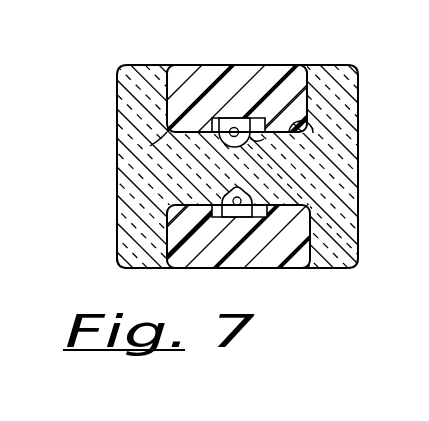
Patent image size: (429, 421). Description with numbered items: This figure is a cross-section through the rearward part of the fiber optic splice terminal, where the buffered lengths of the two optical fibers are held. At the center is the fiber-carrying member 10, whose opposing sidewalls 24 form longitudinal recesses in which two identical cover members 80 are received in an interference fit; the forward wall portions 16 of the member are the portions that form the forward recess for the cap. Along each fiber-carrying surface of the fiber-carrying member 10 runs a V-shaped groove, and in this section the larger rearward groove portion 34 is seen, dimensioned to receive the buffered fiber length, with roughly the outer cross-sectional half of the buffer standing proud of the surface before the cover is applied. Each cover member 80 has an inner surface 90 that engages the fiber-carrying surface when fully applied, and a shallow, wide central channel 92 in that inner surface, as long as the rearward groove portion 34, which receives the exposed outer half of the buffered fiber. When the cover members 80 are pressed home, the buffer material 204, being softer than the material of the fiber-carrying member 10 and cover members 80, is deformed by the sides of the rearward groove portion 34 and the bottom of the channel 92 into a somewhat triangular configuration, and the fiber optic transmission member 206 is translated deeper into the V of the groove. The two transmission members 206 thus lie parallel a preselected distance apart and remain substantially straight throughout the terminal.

The fiber-carrying member 10 is at (112, 208).
The forward wall portions 16 is at (301, 124).
The sidewalls 24 is at (140, 271).
The rearward groove portion 34 is at (233, 147).
The cover member 80 is at (260, 62).
The inner surface 90 is at (150, 146).
The central channel 92 is at (212, 117).
The buffer material 204 is at (252, 141).
The fiber optic transmission member 206 is at (233, 132).